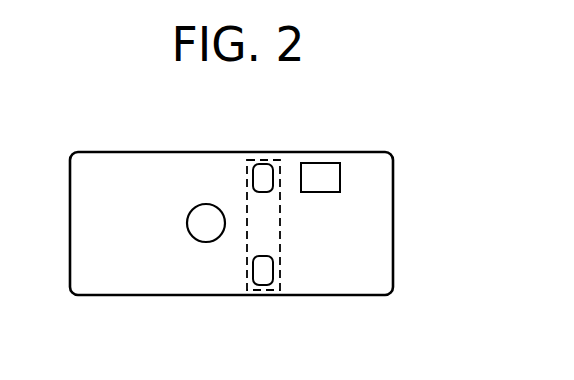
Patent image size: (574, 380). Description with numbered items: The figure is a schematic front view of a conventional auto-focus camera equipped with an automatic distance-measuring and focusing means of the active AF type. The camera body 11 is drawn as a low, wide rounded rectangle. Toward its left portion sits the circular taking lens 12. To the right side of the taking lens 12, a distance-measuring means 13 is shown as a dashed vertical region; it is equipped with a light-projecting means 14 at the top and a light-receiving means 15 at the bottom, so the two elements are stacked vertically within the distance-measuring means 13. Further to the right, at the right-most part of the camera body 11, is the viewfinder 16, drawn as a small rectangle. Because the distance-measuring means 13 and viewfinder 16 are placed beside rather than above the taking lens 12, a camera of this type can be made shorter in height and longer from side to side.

The camera body 11 is at (394, 189).
The taking lens 12 is at (199, 242).
The distance-measuring means 13 is at (251, 202).
The light-projecting means 14 is at (263, 173).
The light-receiving means 15 is at (263, 277).
The viewfinder 16 is at (317, 163).